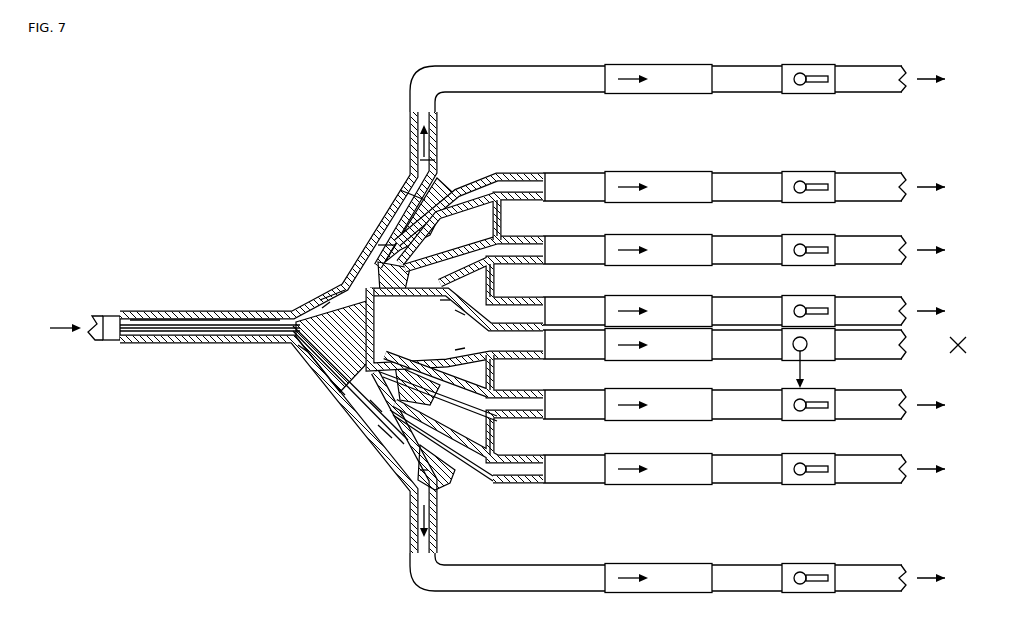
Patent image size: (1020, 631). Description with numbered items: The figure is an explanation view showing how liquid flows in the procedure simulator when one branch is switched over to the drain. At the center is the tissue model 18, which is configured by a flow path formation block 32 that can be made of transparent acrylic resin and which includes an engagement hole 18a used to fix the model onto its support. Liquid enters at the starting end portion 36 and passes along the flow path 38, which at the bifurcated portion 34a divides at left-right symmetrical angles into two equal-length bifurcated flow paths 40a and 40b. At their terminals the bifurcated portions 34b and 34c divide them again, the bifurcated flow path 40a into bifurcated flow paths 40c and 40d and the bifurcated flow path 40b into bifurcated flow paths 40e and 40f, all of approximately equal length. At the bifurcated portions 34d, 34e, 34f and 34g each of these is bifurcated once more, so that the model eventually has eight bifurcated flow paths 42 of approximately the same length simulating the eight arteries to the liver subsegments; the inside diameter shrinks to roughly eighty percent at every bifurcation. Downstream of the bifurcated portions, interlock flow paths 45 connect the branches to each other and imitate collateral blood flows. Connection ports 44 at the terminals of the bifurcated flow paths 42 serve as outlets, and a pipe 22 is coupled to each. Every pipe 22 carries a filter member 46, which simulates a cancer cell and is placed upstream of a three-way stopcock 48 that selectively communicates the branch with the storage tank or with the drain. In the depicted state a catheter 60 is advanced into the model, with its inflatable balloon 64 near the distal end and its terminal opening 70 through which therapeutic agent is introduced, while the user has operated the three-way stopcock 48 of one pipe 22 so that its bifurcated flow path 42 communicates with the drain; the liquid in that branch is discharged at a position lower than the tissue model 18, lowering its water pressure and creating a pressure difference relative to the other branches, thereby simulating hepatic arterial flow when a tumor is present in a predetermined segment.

The tissue model 18 is at (320, 305).
The engagement hole 18a is at (378, 328).
The pipe 22 is at (410, 118).
The flow path formation block 32 is at (248, 311).
The bifurcated portion 34a is at (262, 343).
The bifurcated portion 34b is at (345, 400).
The bifurcated portion 34c is at (348, 288).
The bifurcated portion 34d is at (400, 452).
The bifurcated portion 34e is at (428, 347).
The bifurcated portion 34f is at (456, 312).
The bifurcated portion 34g is at (392, 214).
The starting end portion 36 is at (110, 316).
The flow path 38 is at (165, 343).
The bifurcated flow path 40a is at (300, 346).
The bifurcated flow path 40b is at (330, 305).
The bifurcated flow path 40c is at (385, 425).
The bifurcated flow path 40d is at (380, 410).
The bifurcated flow path 40e is at (445, 300).
The bifurcated flow path 40f is at (385, 250).
The bifurcated flow path 42 is at (478, 178).
The connection port 44 is at (437, 139).
The interlock flow path 45 is at (443, 188).
The filter member 46 is at (640, 94).
The three-way stopcock 48 is at (800, 94).
The catheter 60 is at (206, 332).
The balloon 64 is at (345, 380).
The terminal opening 70 is at (370, 384).